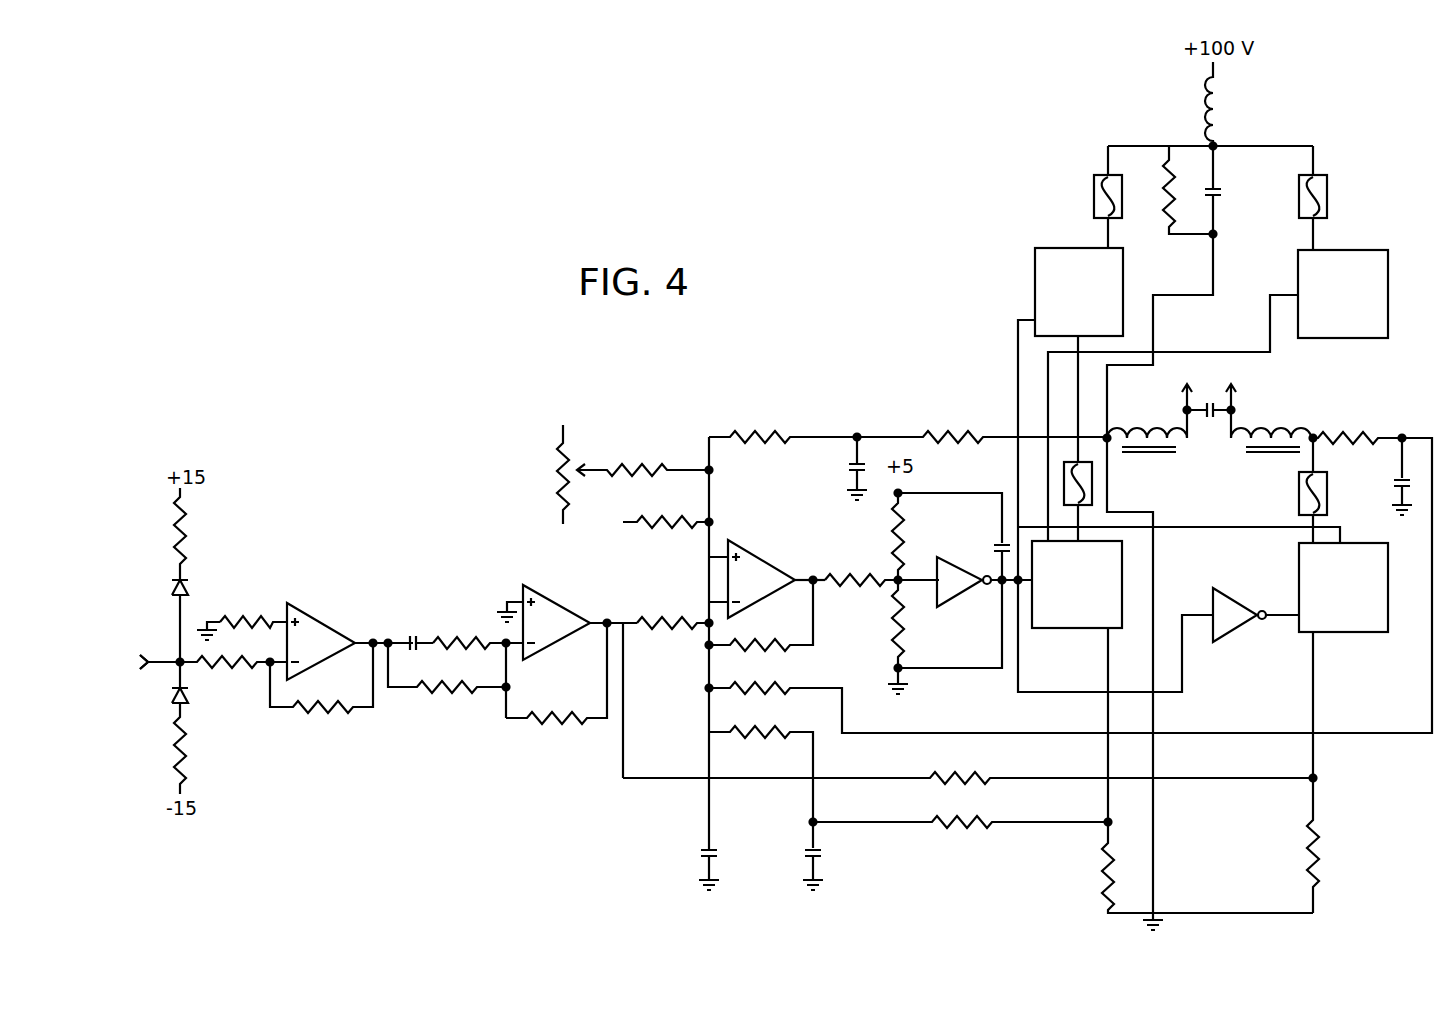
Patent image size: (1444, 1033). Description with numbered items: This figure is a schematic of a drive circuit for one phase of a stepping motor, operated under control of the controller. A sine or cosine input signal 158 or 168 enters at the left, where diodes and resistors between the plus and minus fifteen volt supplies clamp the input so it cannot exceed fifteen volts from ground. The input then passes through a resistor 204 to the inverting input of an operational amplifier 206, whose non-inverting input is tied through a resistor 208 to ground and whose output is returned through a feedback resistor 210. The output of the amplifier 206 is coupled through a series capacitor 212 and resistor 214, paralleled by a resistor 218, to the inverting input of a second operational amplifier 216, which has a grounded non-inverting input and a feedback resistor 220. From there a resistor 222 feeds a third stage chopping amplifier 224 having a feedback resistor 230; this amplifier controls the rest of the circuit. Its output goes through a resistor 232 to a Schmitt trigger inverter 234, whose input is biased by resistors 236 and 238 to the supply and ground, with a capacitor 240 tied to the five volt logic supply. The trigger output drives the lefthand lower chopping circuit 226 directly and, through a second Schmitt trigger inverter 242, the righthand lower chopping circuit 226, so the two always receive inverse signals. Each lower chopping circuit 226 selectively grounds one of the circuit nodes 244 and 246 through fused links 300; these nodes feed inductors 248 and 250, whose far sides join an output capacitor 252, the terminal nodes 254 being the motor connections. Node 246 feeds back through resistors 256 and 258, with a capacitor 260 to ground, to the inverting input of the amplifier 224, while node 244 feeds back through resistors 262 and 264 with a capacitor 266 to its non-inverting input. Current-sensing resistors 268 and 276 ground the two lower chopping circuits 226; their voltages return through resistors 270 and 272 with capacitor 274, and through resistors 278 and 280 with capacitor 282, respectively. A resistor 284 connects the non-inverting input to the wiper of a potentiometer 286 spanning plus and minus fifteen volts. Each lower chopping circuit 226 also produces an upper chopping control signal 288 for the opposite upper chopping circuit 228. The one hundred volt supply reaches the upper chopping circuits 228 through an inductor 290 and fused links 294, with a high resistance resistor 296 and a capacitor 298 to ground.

The sine input signal 158 is at (127, 637).
The cosine input signal 168 is at (127, 666).
The resistor 204 is at (216, 670).
The operational amplifier 206 is at (321, 641).
The resistor 208 is at (238, 618).
The feedback resistor 210 is at (320, 718).
The capacitor 212 is at (408, 636).
The resistor 214 is at (452, 637).
The second operational amplifier 216 is at (543, 622).
The resistor 218 is at (446, 700).
The feedback resistor 220 is at (546, 725).
The resistor 222 is at (680, 622).
The third stage chopping amplifier 224 is at (776, 594).
The lower chopping circuit 226 is at (1093, 599).
The upper chopping circuit 228 is at (1096, 306).
The feedback resistor 230 is at (765, 642).
The resistor 232 is at (868, 596).
The Schmitt trigger inverter 234 is at (957, 596).
The resistor 236 is at (906, 522).
The resistor 238 is at (906, 626).
The capacitor 240 is at (990, 537).
The second Schmitt trigger inverter 242 is at (1236, 600).
The circuit node 244 is at (1110, 446).
The circuit node 246 is at (1317, 434).
The inductor 248 is at (1160, 436).
The inductor 250 is at (1262, 436).
The output capacitor 252 is at (1214, 421).
The terminal nodes 254 is at (1209, 383).
The resistor 256 is at (1380, 432).
The resistor 258 is at (768, 688).
The capacitor 260 is at (1396, 490).
The resistor 262 is at (935, 434).
The resistor 264 is at (758, 432).
The capacitor 266 is at (846, 472).
The resistor 268 is at (1100, 850).
The resistor 270 is at (960, 832).
The resistor 272 is at (765, 737).
The capacitor 274 is at (806, 850).
The resistor 276 is at (1320, 848).
The resistor 278 is at (958, 776).
The resistor 280 is at (684, 518).
The capacitor 282 is at (700, 850).
The resistor 284 is at (655, 465).
The potentiometer 286 is at (557, 470).
The upper chopping control signal 288 is at (1269, 326).
The inductor 290 is at (1222, 136).
The fused link 294 is at (1094, 184).
The high resistance resistor 296 is at (1162, 220).
The capacitor 298 is at (1222, 198).
The fused link 300 is at (1094, 482).